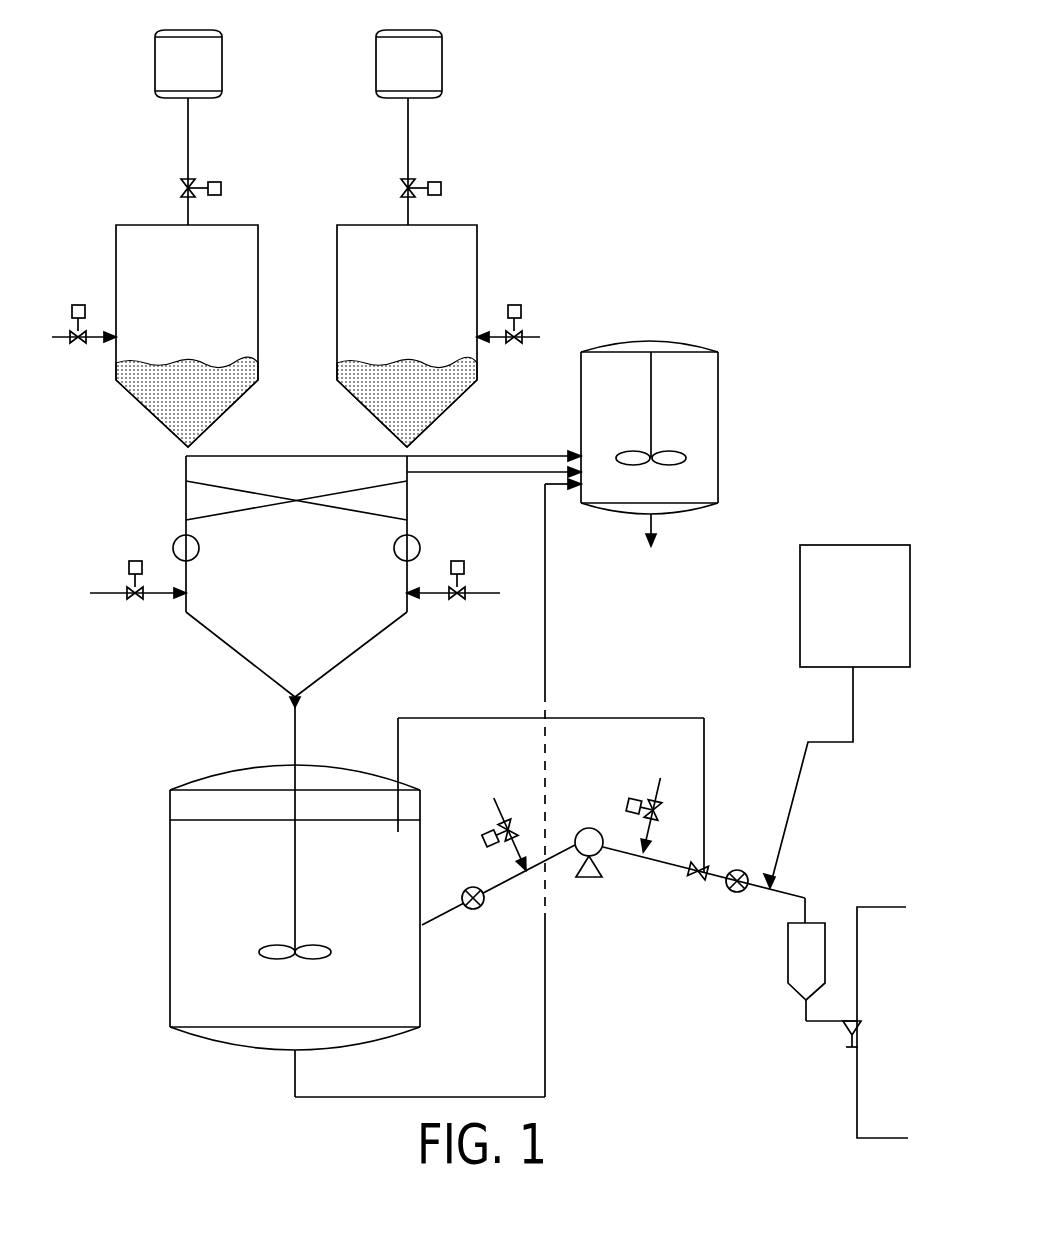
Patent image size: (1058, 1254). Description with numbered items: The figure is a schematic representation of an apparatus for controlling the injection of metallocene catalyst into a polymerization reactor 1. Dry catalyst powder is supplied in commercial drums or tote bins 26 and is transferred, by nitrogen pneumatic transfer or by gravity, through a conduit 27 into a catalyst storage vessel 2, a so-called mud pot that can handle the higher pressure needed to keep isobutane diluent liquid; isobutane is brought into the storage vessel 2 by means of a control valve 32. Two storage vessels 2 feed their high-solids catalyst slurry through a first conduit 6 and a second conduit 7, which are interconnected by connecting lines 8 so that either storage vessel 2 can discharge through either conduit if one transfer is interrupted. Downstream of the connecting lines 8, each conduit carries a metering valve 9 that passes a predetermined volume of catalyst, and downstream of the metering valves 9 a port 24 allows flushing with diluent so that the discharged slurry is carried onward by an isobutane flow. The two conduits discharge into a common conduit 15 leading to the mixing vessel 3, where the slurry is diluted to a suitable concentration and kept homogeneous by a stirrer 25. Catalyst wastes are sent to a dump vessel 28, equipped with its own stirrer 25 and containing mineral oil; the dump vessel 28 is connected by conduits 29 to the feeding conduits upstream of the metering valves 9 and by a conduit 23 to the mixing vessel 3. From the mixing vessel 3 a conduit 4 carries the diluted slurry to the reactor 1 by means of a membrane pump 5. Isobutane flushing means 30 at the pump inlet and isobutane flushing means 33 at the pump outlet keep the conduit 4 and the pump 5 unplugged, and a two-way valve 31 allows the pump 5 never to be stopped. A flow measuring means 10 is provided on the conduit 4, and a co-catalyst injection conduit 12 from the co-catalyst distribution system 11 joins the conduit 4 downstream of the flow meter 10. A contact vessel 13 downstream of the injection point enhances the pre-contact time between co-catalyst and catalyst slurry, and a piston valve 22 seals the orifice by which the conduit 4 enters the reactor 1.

The polymerization reactor 1 is at (897, 1010).
The catalyst storage vessel 2 is at (196, 295).
The mixing vessel 3 is at (224, 865).
The conduit 4 is at (436, 926).
The pumping means 5 is at (590, 880).
The conduit 6 is at (238, 662).
The conduit 7 is at (354, 656).
The connecting line 8 is at (248, 510).
The metering valve 9 is at (199, 549).
The flow measuring means 10 is at (464, 890).
The co-catalyst distribution system 11 is at (873, 600).
The co-catalyst injection conduit 12 is at (792, 816).
The contact vessel 13 is at (788, 956).
The common conduit 15 is at (298, 736).
The piston valve 22 is at (842, 1030).
The conduit 23 is at (546, 568).
The port 24 is at (108, 598).
The stirrer 25 is at (660, 462).
The drum 26 is at (218, 66).
The conduit 27 is at (192, 146).
The dump vessel 28 is at (628, 385).
The conduit 29 is at (508, 468).
The isobutane flushing means 30 is at (492, 797).
The two-way valve 31 is at (698, 880).
The inlet valve 32 is at (100, 342).
The isobutane flushing means 33 is at (658, 778).